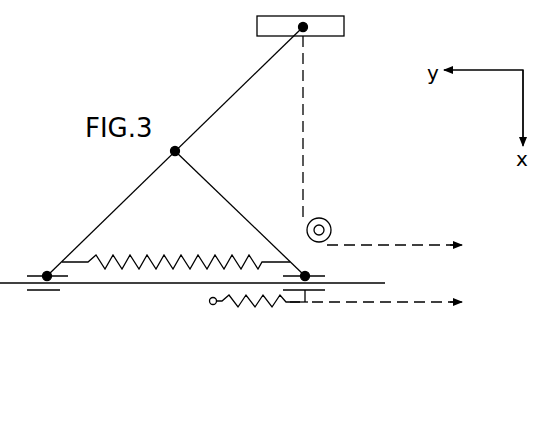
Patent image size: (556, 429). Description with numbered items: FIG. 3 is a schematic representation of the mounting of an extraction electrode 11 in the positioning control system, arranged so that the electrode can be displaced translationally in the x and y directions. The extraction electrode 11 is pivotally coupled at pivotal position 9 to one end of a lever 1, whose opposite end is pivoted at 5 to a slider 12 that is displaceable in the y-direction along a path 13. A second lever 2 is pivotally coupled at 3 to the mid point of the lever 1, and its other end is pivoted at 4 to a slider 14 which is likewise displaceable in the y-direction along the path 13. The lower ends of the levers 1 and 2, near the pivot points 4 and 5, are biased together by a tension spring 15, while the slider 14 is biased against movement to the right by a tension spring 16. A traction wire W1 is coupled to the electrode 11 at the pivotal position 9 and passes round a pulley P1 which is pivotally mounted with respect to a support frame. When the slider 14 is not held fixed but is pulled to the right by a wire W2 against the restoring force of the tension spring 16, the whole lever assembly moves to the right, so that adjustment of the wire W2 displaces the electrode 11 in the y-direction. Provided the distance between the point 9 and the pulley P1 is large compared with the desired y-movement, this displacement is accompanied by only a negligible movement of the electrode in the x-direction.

The lever 1 is at (233, 97).
The lever 2 is at (217, 189).
The pivotal coupling 3 is at (180, 150).
The pivot 4 is at (310, 274).
The pivot 5 is at (45, 273).
The pivotal position 9 is at (309, 30).
The extraction electrode 11 is at (257, 27).
The slider 12 is at (60, 290).
The path 13 is at (160, 283).
The slider 14 is at (318, 295).
The tension spring 15 is at (150, 259).
The tension spring 16 is at (243, 298).
The traction wire W1 is at (305, 143).
The wire W2 is at (400, 302).
The pulley P1 is at (329, 221).